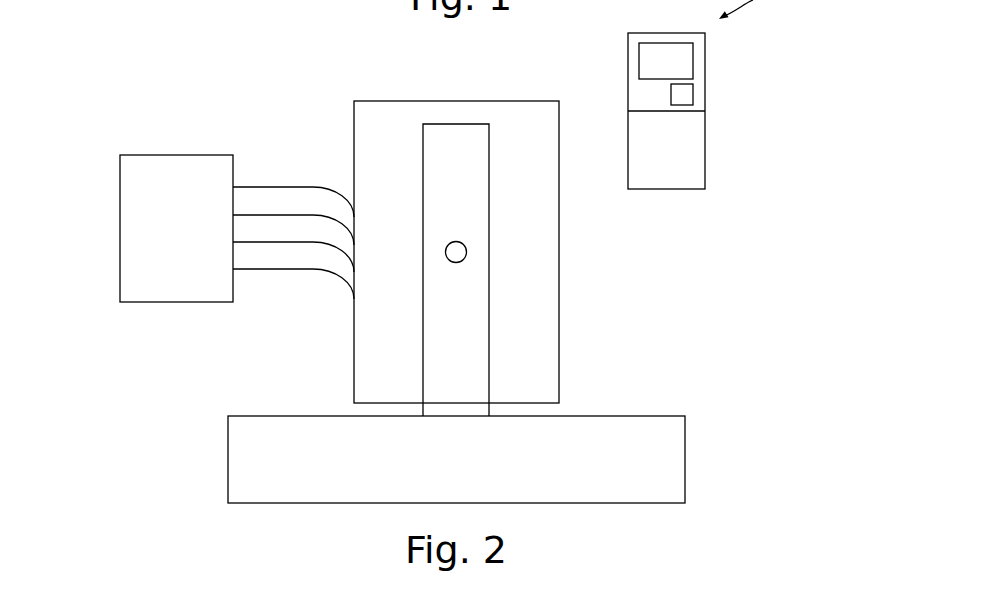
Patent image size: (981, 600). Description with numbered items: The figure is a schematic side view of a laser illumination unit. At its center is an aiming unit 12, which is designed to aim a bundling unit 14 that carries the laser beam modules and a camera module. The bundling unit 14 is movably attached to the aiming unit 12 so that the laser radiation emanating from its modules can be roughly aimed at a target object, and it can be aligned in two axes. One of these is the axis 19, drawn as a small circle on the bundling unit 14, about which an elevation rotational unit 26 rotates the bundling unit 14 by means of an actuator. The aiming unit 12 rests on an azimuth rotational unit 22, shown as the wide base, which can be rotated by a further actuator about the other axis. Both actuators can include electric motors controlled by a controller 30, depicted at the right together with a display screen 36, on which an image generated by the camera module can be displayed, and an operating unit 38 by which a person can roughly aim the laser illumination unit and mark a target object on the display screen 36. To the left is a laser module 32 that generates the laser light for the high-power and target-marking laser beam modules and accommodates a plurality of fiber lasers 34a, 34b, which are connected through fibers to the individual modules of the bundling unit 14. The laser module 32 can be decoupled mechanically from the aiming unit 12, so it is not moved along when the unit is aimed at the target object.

The aiming unit 12 is at (678, 243).
The bundling unit 14 is at (520, 101).
The axis 19 is at (455, 252).
The azimuth rotational unit 22 is at (667, 468).
The elevation rotational unit 26 is at (463, 362).
The controller 30 is at (707, 111).
The laser module 32 is at (148, 155).
The fiber laser 34a is at (279, 296).
The fiber laser 34b is at (275, 152).
The display screen 36 is at (693, 55).
The operating unit 38 is at (693, 96).